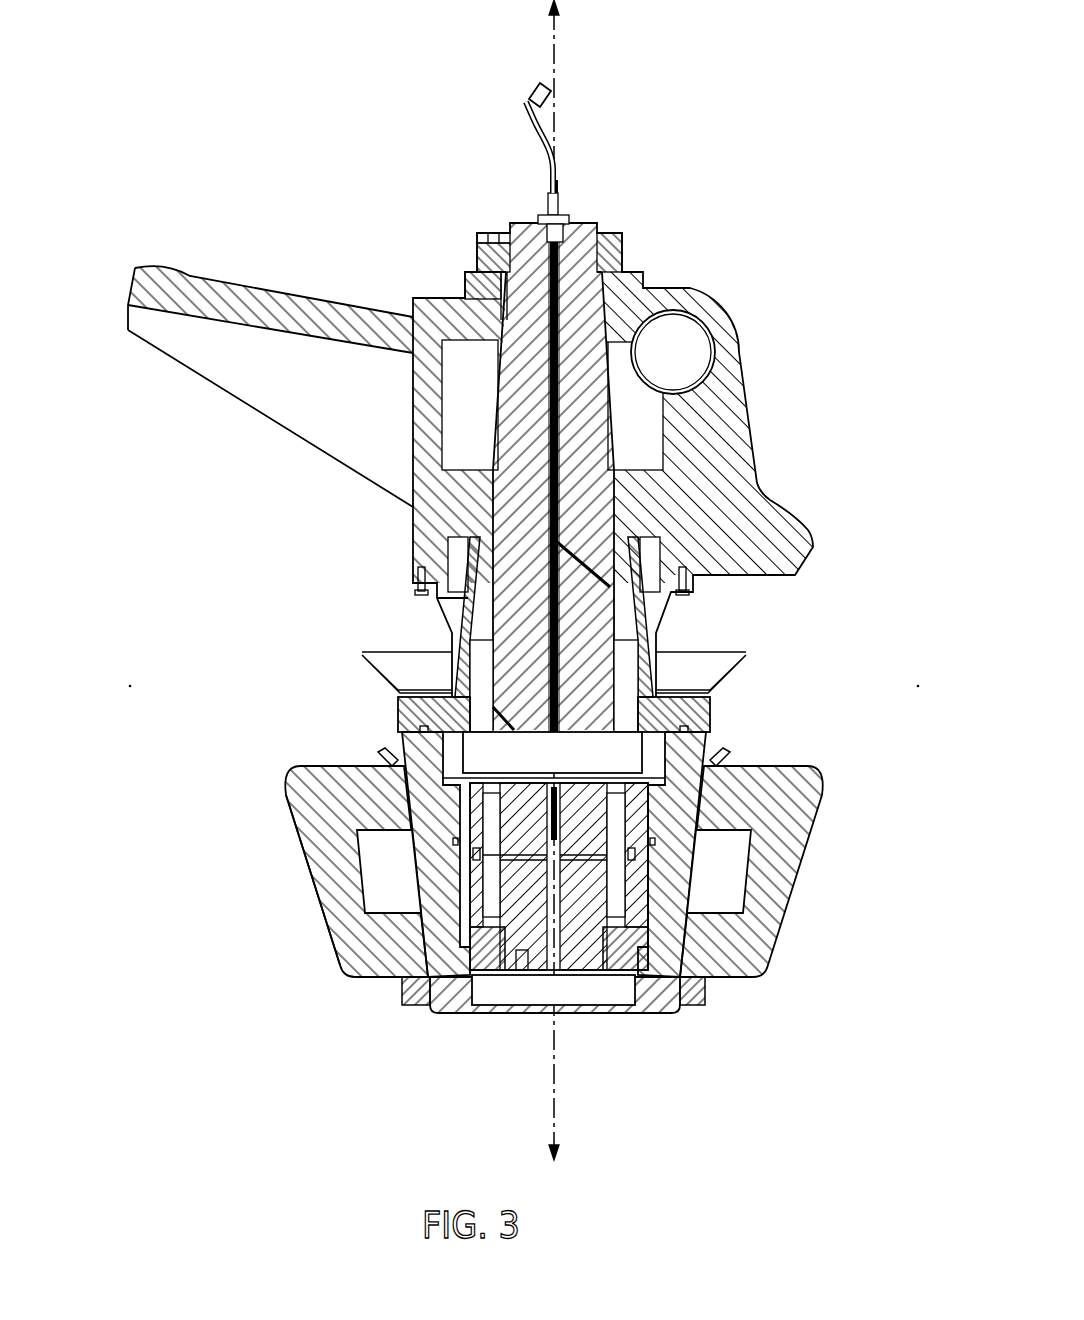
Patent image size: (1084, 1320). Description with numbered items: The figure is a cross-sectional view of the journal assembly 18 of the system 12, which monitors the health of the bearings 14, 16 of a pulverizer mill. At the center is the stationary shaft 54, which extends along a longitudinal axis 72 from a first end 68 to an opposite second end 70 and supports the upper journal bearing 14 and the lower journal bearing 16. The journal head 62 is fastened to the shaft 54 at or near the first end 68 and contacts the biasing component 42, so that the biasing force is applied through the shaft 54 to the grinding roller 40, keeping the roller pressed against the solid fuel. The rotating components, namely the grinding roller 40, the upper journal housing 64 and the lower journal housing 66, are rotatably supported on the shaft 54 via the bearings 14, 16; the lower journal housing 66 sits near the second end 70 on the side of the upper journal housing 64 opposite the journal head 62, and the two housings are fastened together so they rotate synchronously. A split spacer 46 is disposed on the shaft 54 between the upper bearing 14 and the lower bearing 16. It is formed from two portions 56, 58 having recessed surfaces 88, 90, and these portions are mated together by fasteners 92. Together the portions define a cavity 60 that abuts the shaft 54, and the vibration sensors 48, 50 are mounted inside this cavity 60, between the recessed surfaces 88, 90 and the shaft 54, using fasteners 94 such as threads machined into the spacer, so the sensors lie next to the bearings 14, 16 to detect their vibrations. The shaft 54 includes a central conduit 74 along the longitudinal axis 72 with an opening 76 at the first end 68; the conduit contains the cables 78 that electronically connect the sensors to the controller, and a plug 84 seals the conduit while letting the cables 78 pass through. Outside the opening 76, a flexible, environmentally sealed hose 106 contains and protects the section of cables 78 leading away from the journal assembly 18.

The system 12 is at (752, 160).
The journal assembly 18 is at (792, 86).
The upper journal bearing 14 is at (541, 768).
The lower journal bearing 16 is at (558, 1004).
The grinding roller 40 is at (328, 868).
The biasing component 42 is at (675, 352).
The split spacer 46 is at (515, 955).
The vibration sensor 48 is at (700, 781).
The vibration sensor 50 is at (695, 920).
The shaft 54 is at (466, 282).
The first portion of split spacer 56 is at (402, 768).
The second portion of split spacer 58 is at (435, 925).
The cavity 60 is at (485, 810).
The journal head 62 is at (338, 300).
The upper journal housing 64 is at (435, 716).
The lower journal housing 66 is at (628, 1012).
The first end 68 is at (620, 130).
The second end 70 is at (500, 1090).
The longitudinal axis 72 is at (553, 62).
The central conduit 74 is at (548, 412).
The opening 76 is at (578, 222).
The cables 78 is at (549, 438).
The plug 84 is at (546, 218).
The recessed surface 88 is at (425, 778).
The recessed surface 90 is at (405, 905).
The fasteners 92 is at (492, 830).
The fasteners 94 is at (725, 752).
The hose 106 is at (528, 118).